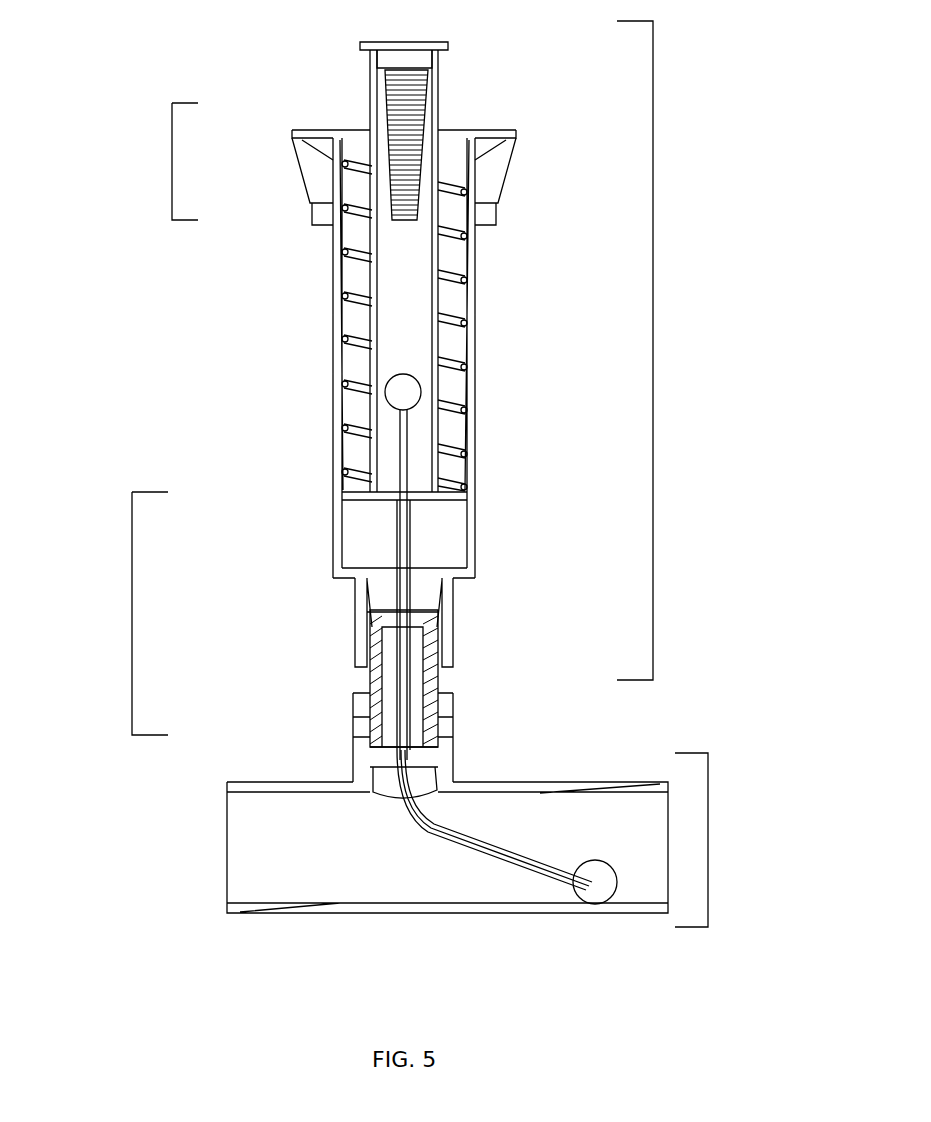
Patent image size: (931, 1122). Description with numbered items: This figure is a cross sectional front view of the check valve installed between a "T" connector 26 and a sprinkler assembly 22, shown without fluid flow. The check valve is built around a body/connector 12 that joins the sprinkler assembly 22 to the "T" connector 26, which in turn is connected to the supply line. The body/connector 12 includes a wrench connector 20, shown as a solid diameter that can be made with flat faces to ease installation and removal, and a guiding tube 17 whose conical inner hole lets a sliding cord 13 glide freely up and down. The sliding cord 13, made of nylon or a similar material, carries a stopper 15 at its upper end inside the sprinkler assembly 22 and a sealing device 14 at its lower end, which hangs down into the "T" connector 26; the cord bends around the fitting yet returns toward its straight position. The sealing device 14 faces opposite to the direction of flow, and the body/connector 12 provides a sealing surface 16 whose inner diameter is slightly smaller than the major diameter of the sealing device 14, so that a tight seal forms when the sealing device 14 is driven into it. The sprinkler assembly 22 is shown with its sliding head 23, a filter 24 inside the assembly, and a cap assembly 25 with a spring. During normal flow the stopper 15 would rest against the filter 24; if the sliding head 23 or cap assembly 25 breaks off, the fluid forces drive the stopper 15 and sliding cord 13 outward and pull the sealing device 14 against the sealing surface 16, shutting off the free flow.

The body/connector 12 is at (130, 603).
The sliding cord 13 is at (398, 496).
The sealing device 14 is at (573, 883).
The stopper 15 is at (421, 386).
The sealing surface 16 is at (378, 744).
The guiding tube 17 is at (427, 579).
The wrench connector 20 is at (445, 680).
The sprinkler assembly 22 is at (656, 398).
The sliding head 23 is at (358, 44).
The filter 24 is at (431, 93).
The cap assembly 25 is at (170, 157).
The "T" connector 26 is at (714, 821).